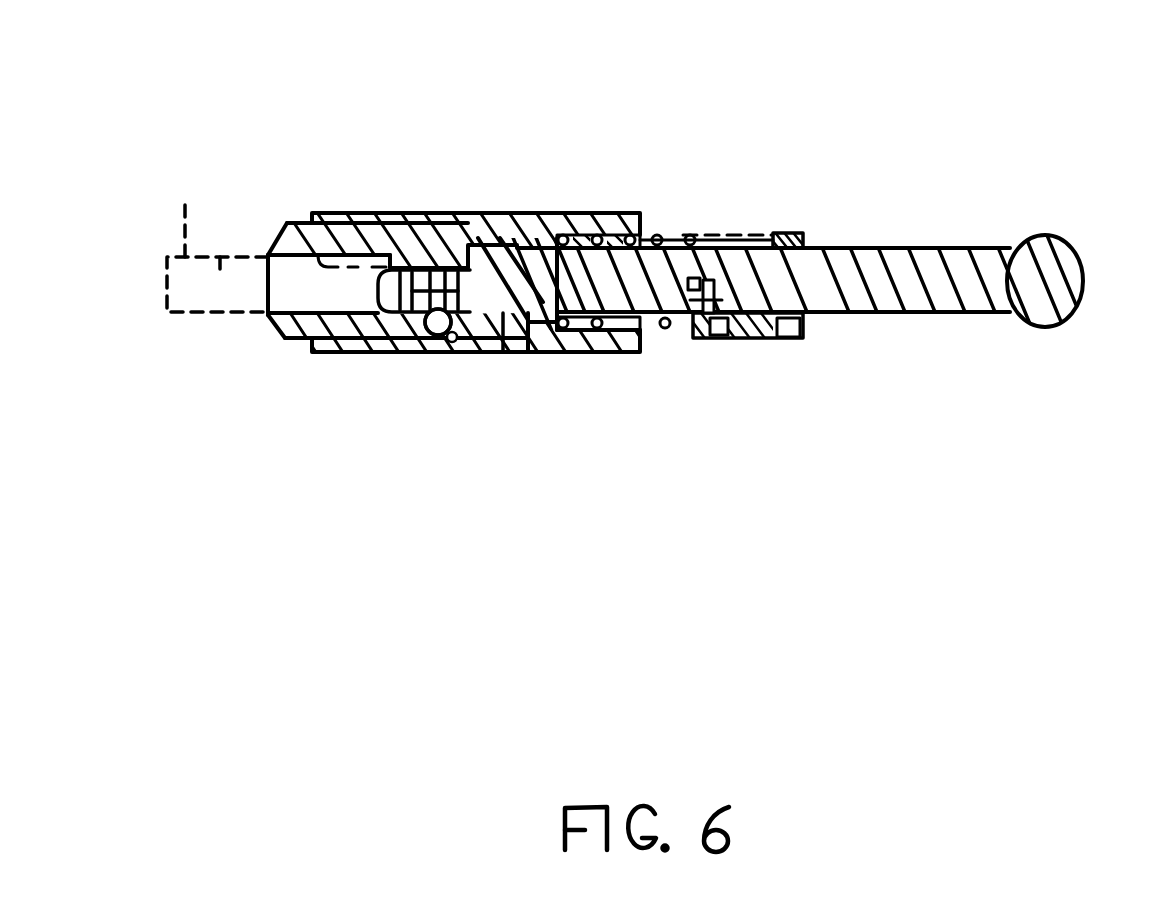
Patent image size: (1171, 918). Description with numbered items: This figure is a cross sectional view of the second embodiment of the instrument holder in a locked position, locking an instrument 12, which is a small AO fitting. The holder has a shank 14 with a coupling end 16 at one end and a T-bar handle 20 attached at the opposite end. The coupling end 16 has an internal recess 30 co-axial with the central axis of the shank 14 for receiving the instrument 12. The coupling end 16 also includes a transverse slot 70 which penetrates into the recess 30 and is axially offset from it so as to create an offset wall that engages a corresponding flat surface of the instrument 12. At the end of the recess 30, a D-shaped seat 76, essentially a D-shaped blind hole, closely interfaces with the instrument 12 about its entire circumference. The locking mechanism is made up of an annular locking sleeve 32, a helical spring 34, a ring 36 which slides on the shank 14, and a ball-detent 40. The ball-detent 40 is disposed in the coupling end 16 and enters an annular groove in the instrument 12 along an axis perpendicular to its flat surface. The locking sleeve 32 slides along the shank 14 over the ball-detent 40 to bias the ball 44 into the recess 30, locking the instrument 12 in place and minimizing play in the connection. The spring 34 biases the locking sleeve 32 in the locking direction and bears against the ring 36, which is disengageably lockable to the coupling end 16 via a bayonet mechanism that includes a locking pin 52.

The instrument 12 is at (185, 197).
The shank 14 is at (858, 248).
The coupling end 16 is at (352, 350).
The T-bar handle 20 is at (1055, 322).
The internal recess 30 is at (290, 311).
The annular locking sleeve 32 is at (505, 213).
The helical spring 34 is at (667, 340).
The ring 36 is at (735, 237).
The ball-detent 40 is at (448, 350).
The ball 44 is at (592, 461).
The locking pin 52 is at (718, 340).
The transverse slot 70 is at (397, 350).
The D-shaped seat 76 is at (503, 352).